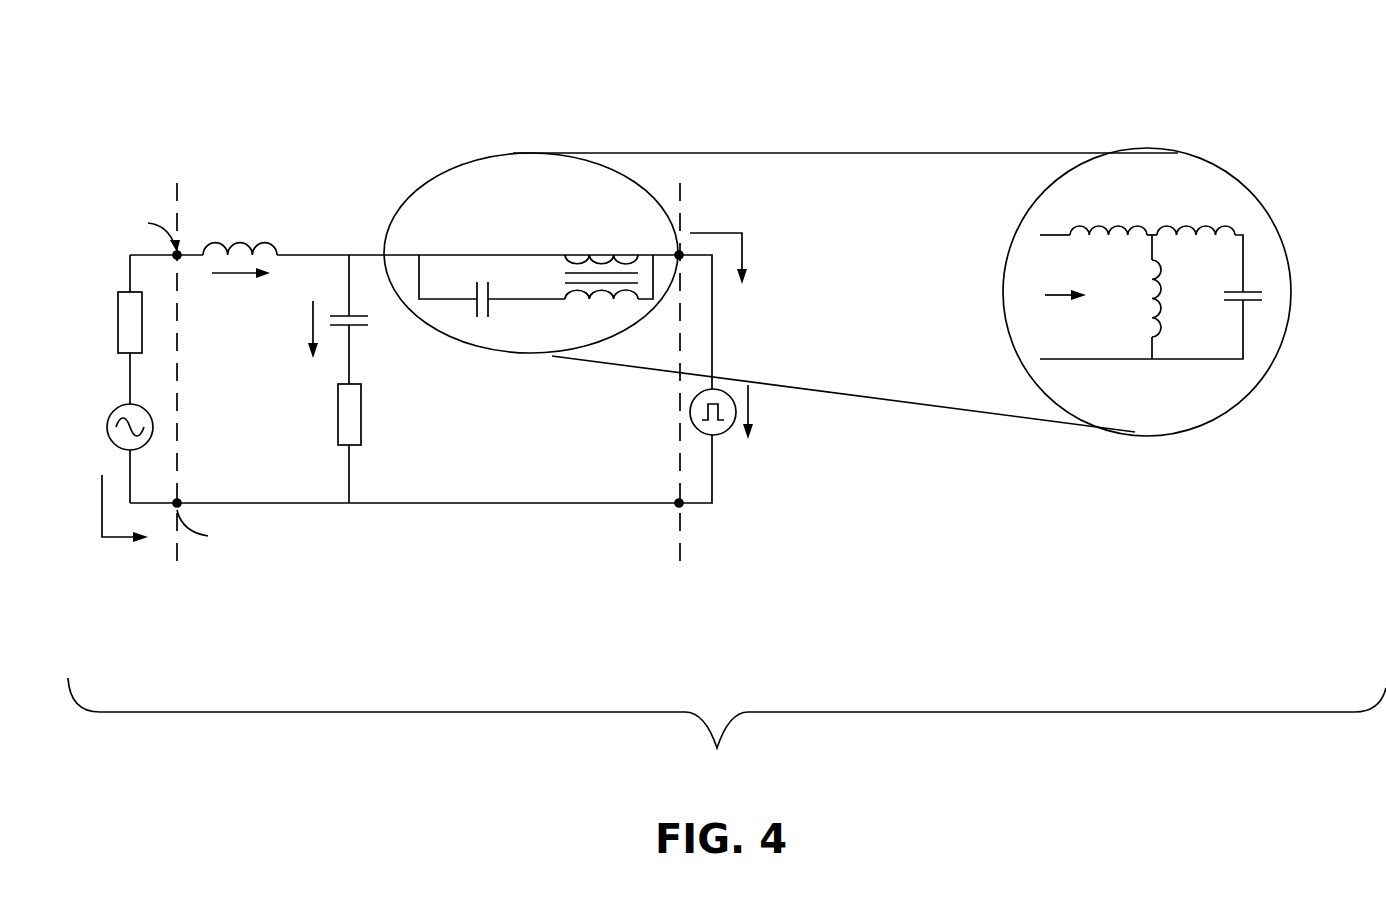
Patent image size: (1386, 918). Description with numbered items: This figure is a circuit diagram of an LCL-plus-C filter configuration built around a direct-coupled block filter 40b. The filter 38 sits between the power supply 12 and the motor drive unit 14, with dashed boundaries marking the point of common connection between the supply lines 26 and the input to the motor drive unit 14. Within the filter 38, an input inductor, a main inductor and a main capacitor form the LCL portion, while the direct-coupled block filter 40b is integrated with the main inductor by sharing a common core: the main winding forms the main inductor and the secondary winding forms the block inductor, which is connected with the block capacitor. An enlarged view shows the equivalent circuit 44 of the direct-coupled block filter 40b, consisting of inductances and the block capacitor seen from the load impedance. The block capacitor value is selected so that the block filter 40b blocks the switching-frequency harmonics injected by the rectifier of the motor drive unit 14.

The filter 38 is at (300, 120).
The supply lines 26 is at (128, 257).
The power supply 12 is at (151, 595).
The motor drive unit 14 is at (702, 595).
The direct-coupled block filter 40b is at (483, 158).
The equivalent circuit 44 is at (1180, 152).